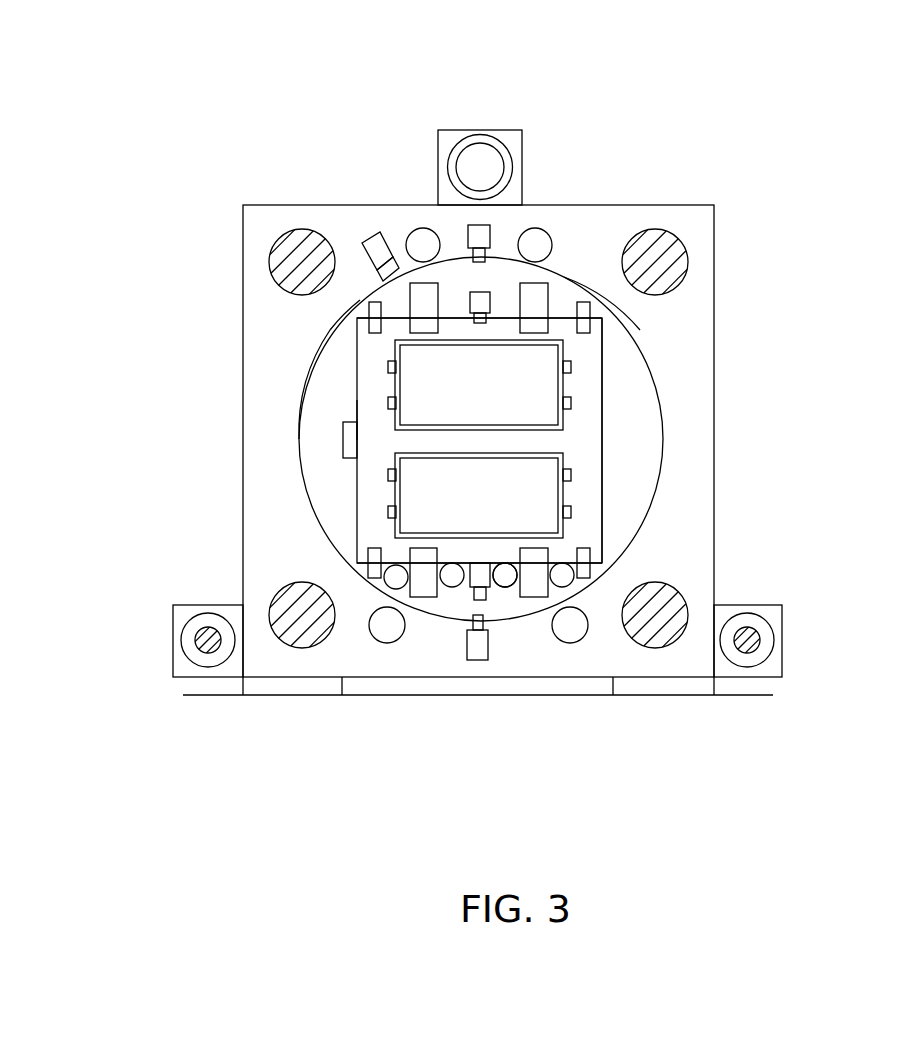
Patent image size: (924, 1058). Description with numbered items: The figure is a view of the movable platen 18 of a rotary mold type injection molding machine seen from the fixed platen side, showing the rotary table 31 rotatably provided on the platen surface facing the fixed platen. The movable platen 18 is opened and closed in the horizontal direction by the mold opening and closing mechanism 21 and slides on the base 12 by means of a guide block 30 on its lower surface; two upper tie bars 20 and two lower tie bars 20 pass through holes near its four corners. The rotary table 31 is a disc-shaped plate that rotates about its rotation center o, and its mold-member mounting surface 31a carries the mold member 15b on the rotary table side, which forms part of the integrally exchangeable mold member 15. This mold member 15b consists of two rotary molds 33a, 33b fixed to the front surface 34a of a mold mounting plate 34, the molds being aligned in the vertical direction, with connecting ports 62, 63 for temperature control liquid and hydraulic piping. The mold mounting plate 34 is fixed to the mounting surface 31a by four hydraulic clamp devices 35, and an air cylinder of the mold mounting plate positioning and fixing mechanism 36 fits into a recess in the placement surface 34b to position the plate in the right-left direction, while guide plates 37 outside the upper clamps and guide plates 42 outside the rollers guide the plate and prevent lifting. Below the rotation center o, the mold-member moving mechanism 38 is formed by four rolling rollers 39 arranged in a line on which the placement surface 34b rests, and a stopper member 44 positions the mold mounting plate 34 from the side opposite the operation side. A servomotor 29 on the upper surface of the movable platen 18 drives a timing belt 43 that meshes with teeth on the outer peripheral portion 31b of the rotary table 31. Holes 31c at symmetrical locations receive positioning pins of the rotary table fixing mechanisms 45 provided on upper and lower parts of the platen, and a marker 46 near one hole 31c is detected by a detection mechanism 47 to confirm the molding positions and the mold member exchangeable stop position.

The base 12 is at (745, 695).
The mold member 15 is at (608, 372).
The mold member on the rotary table side 15b is at (353, 408).
The movable platen 18 is at (820, 64).
The tie bar 20 is at (668, 258).
The mold opening and closing mechanism 21 is at (183, 640).
The servomotor 29 is at (490, 130).
The guide block 30 is at (282, 688).
The rotary table 31 is at (320, 353).
The mold-member mounting surface 31a is at (343, 357).
The outer peripheral portion 31b is at (562, 277).
The hole 31c is at (538, 228).
The rotary mold 33a is at (520, 401).
The rotary mold 33b is at (520, 514).
The mold mounting plate 34 is at (605, 410).
The front surface 34a is at (567, 478).
The placement surface 34b is at (411, 664).
The hydraulic clamp device 35 is at (424, 283).
The mold mounting plate positioning and fixing mechanism 36 is at (470, 232).
The guide plate 37 is at (337, 323).
The mold-member moving mechanism 38 is at (541, 689).
The rolling roller 39 is at (533, 685).
The guide plate 42 is at (365, 575).
The timing belt 43 is at (513, 205).
The stopper member 44 is at (343, 440).
The rotary table fixing mechanism 45 is at (478, 292).
The marker 46 is at (360, 262).
The detection mechanism 47 is at (355, 245).
The connecting port 62 is at (388, 367).
The connecting port 63 is at (571, 367).
The rotation center o is at (478, 440).